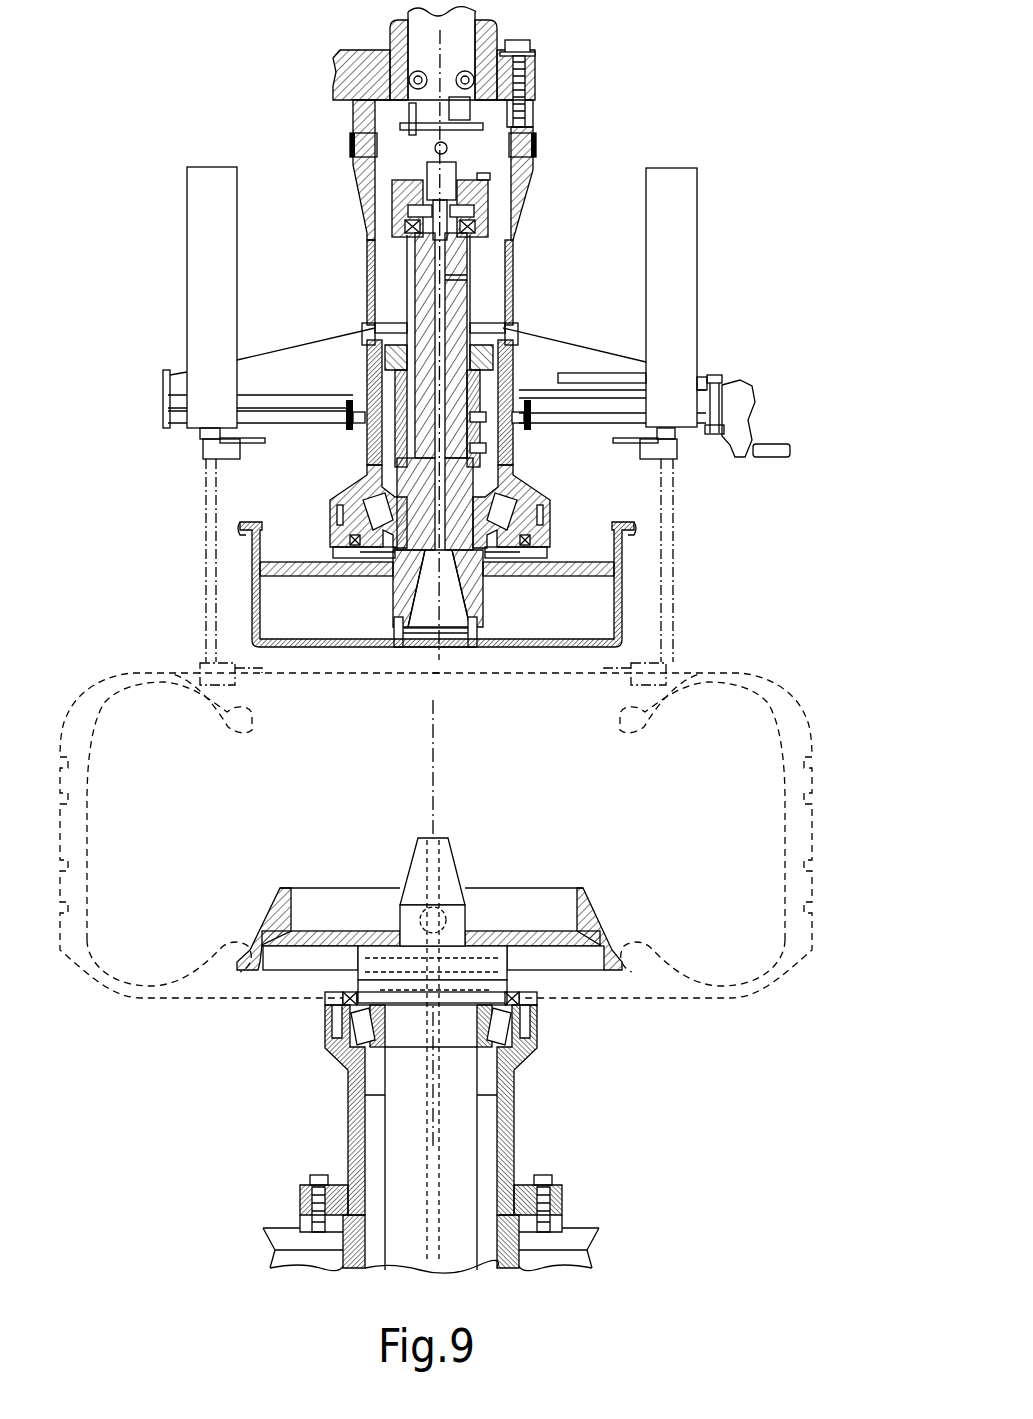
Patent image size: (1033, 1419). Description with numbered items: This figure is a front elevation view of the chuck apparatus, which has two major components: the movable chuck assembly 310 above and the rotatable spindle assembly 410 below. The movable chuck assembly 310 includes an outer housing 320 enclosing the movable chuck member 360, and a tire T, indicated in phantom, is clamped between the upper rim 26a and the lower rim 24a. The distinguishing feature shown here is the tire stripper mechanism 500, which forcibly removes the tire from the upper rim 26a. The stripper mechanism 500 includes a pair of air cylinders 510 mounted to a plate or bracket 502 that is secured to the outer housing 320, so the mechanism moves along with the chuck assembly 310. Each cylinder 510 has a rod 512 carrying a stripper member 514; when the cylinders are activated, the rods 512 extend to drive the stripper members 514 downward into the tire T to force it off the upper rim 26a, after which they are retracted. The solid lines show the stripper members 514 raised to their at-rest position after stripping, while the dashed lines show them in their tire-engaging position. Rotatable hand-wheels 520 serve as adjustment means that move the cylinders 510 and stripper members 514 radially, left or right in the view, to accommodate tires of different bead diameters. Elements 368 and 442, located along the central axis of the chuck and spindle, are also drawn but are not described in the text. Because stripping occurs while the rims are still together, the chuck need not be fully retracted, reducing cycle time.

The movable chuck assembly 310 is at (565, 60).
The outer housing 320 is at (513, 280).
The movable chuck member 360 is at (427, 273).
The conical centering member 368 is at (443, 600).
The upper rim 26a is at (618, 580).
The air cylinders 510 is at (207, 268).
The tire stripper mechanism 500 is at (727, 250).
The bracket 502 is at (297, 362).
The hand-wheels 520 is at (748, 410).
The rod 512 is at (205, 432).
The stripper member 514 is at (225, 454).
The tire T is at (790, 703).
The lower rim 24a is at (597, 922).
The centering cone 442 is at (443, 860).
The rotatable spindle assembly 410 is at (298, 995).